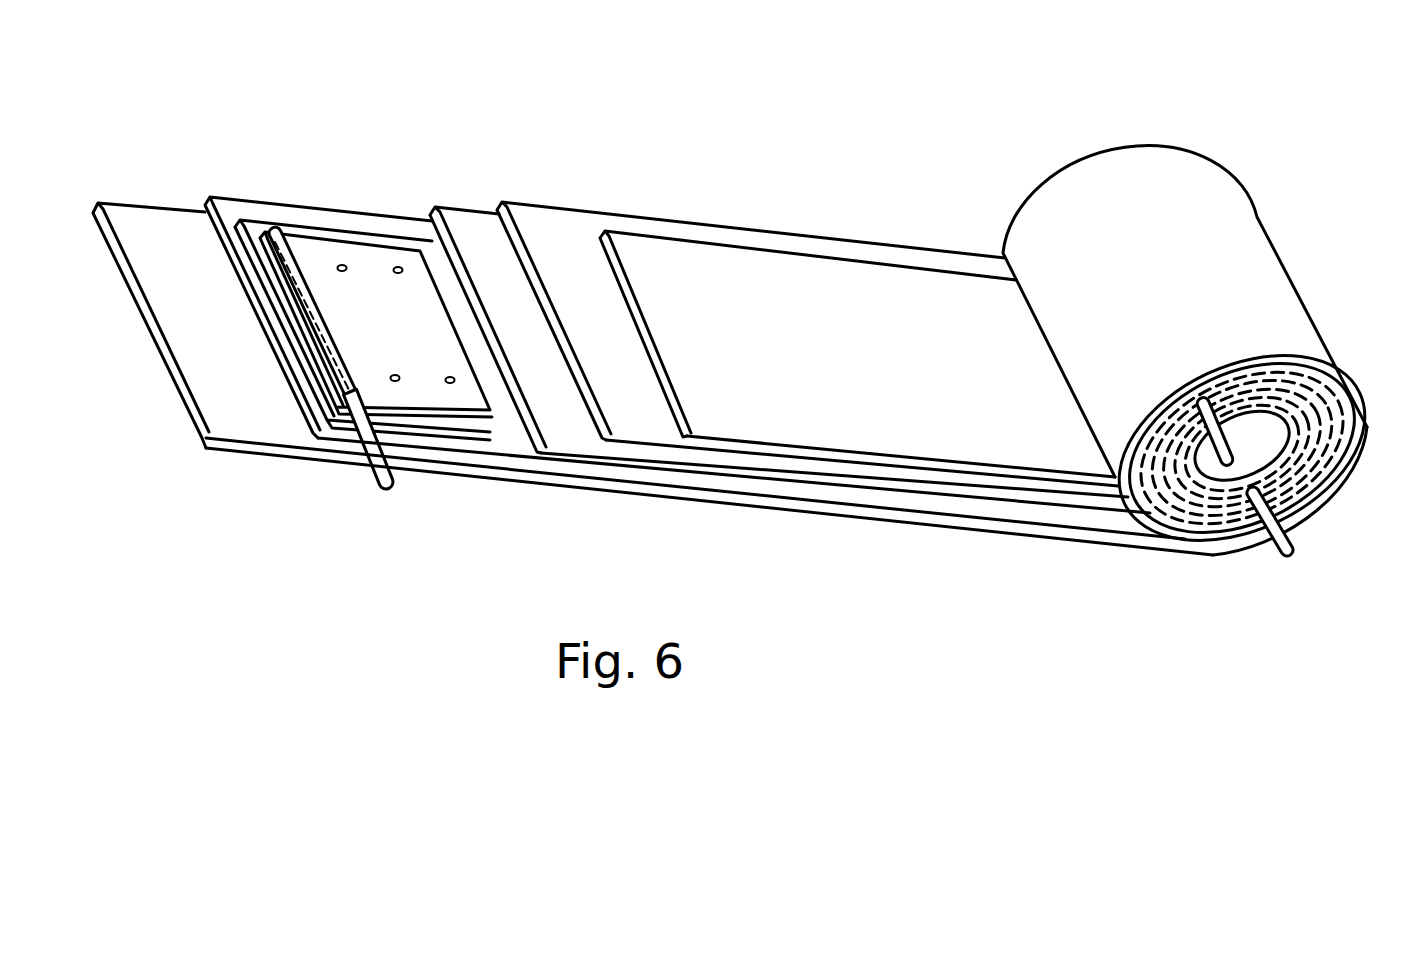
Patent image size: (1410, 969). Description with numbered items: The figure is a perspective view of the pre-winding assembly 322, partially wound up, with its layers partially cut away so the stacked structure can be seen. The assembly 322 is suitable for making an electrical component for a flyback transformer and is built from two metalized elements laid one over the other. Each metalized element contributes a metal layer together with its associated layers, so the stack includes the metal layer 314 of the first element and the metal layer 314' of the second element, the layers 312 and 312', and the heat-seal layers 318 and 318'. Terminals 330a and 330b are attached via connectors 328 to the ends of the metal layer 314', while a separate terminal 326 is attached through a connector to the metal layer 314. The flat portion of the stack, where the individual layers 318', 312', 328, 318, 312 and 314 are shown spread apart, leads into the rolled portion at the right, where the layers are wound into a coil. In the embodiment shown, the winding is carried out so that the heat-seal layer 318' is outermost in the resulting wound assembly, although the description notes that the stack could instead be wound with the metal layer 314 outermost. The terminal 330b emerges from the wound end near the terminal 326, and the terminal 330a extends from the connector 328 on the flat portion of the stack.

The pre-winding assembly 322 is at (829, 209).
The heat-seal layer 318 is at (488, 294).
The heat-seal layer 318' is at (155, 344).
The anode 312 is at (751, 299).
The anode 312' is at (318, 356).
The metal layer 314 is at (808, 334).
The metal layer 314' is at (709, 488).
The connector 328 is at (401, 346).
The terminal 326 is at (1318, 484).
The terminal 330a is at (374, 485).
The terminal 330b is at (1284, 555).